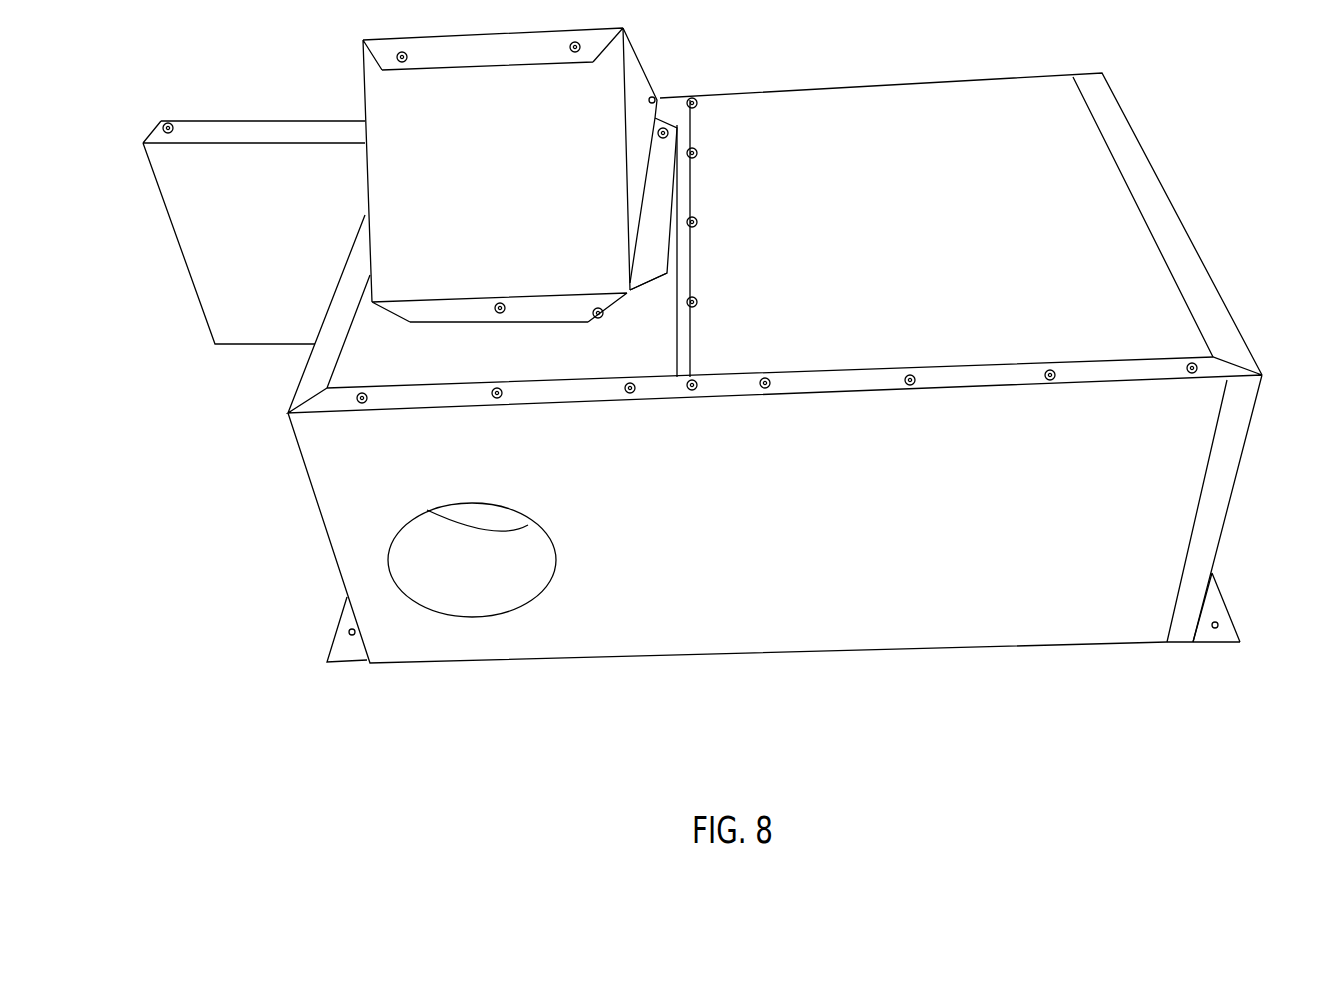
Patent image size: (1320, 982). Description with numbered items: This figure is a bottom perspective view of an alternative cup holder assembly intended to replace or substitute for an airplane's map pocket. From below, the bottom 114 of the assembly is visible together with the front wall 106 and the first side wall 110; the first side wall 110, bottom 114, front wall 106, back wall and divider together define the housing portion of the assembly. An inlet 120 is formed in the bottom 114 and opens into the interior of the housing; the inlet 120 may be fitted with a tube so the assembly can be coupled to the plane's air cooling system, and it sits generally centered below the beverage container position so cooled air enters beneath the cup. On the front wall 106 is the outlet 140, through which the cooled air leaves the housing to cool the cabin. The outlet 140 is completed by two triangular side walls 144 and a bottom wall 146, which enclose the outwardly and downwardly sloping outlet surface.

The front wall 106 is at (995, 241).
The first side wall 110 is at (298, 373).
The bottom 114 is at (915, 543).
The inlet 120 is at (553, 550).
The outlet 140 is at (660, 177).
The triangular side walls 144 is at (670, 138).
The bottom wall 146 is at (540, 186).